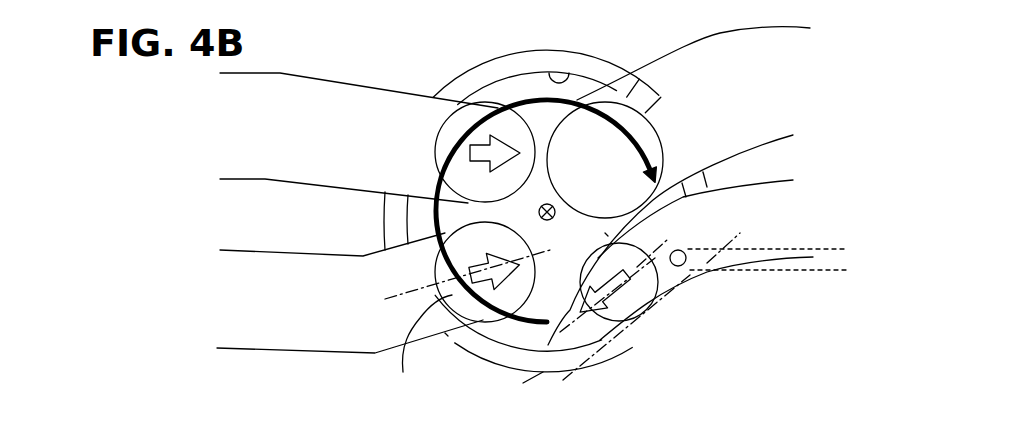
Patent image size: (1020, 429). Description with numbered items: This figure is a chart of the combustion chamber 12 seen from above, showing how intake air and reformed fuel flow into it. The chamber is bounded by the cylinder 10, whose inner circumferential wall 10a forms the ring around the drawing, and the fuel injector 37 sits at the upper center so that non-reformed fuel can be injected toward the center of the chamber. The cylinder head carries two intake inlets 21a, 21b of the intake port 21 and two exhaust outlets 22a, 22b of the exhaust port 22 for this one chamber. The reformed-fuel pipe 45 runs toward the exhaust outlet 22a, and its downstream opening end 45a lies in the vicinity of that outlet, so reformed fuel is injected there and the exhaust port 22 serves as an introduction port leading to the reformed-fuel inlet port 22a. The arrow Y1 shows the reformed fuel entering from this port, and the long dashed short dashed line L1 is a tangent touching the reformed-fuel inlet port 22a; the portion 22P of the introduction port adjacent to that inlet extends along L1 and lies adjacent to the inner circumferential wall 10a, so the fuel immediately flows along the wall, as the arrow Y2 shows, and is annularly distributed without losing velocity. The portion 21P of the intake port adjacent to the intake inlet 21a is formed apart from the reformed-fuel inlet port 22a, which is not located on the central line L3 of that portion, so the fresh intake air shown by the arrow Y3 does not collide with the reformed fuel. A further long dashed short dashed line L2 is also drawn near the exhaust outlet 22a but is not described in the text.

The photosensitive drum 10 is at (532, 50).
The inner circumferential wall 10a is at (572, 72).
The combustion chamber 12 is at (518, 90).
The intake port 21 is at (315, 178).
The intake inlet 21a is at (405, 343).
The intake inlet 21b is at (445, 128).
The portion of the intake port 21P is at (445, 333).
The exhaust port 22 is at (793, 135).
The exhaust outlet 22a is at (650, 290).
The exhaust outlet 22b is at (633, 108).
The portion of the introduction port 22P is at (605, 233).
The fuel injector 37 is at (551, 220).
The reformed-fuel pipe 45 is at (778, 278).
The downstream opening end 45a is at (686, 260).
The arrow Y1 is at (519, 387).
The arrow Y2 is at (653, 125).
The arrow Y3 is at (485, 272).
The long dashed short dashed line L1 is at (619, 332).
The line L2 is at (688, 242).
The central line L3 is at (450, 283).